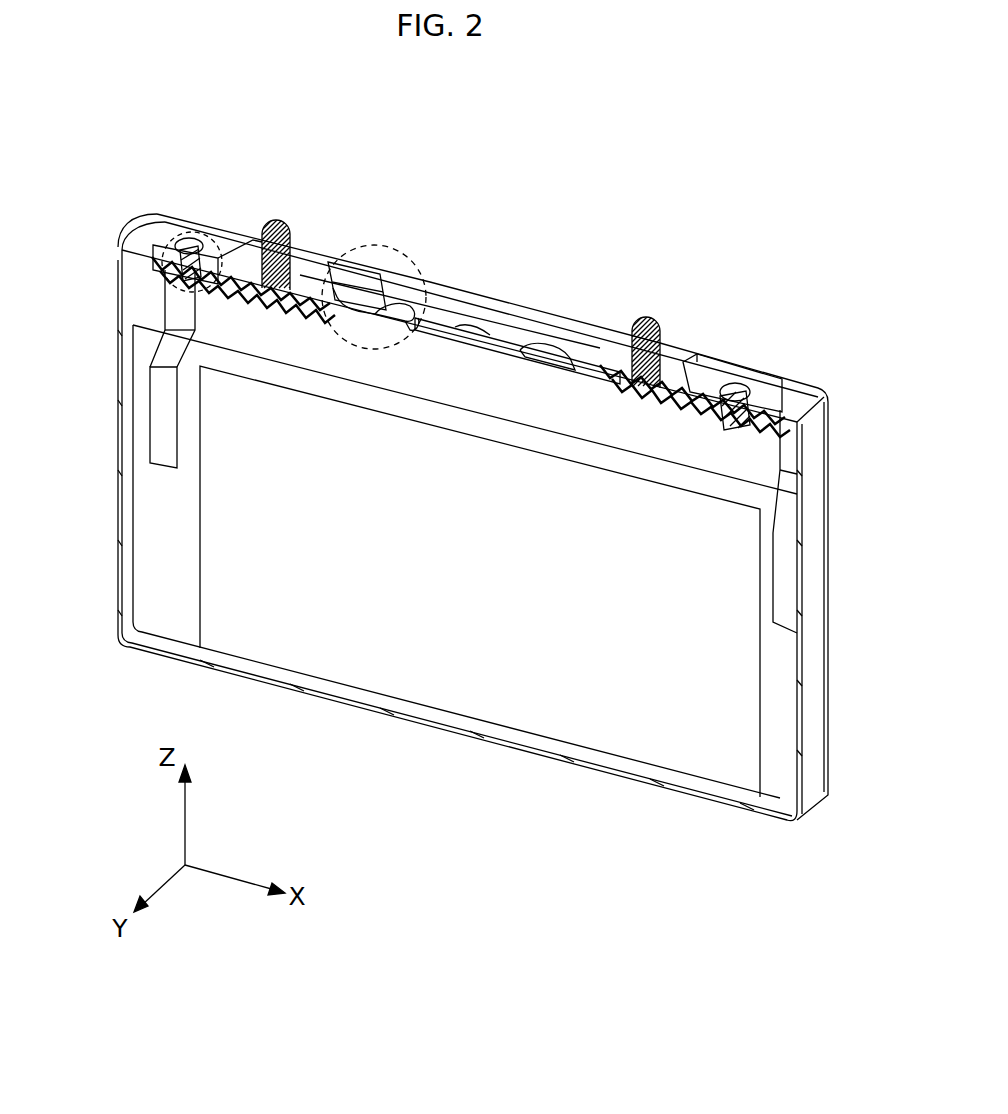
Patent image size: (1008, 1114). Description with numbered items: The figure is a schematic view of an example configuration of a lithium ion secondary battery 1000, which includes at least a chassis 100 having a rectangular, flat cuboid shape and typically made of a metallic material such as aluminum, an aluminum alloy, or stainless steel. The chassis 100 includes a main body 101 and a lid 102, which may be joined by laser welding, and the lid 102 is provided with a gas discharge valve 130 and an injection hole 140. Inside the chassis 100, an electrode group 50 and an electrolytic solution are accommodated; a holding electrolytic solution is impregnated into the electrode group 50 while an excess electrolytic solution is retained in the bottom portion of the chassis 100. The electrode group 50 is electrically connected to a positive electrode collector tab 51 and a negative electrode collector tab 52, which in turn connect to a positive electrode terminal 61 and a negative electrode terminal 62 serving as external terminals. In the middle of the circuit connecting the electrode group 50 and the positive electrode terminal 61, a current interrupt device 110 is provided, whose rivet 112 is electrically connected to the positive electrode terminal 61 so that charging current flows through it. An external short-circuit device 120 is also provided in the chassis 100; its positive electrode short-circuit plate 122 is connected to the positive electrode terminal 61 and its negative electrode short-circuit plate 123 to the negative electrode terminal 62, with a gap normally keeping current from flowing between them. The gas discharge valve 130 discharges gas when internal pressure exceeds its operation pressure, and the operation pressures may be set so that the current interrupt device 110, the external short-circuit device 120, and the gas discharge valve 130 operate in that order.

The battery 1000 is at (630, 226).
The chassis 100 is at (862, 316).
The main body 101 is at (820, 428).
The lid 102 is at (805, 400).
The electrode group 50 is at (382, 543).
The positive electrode collector tab 51 is at (155, 412).
The negative electrode collector tab 52 is at (785, 585).
The positive electrode terminal 61 is at (274, 234).
The negative electrode terminal 62 is at (647, 320).
The current interrupt device 110 is at (175, 288).
The rivet 112 is at (187, 244).
The external short-circuit device 120 is at (397, 250).
The positive electrode short-circuit plate 122 is at (350, 272).
The negative electrode short-circuit plate 123 is at (405, 277).
The gas discharge valve 130 is at (470, 332).
The injection hole 140 is at (542, 347).